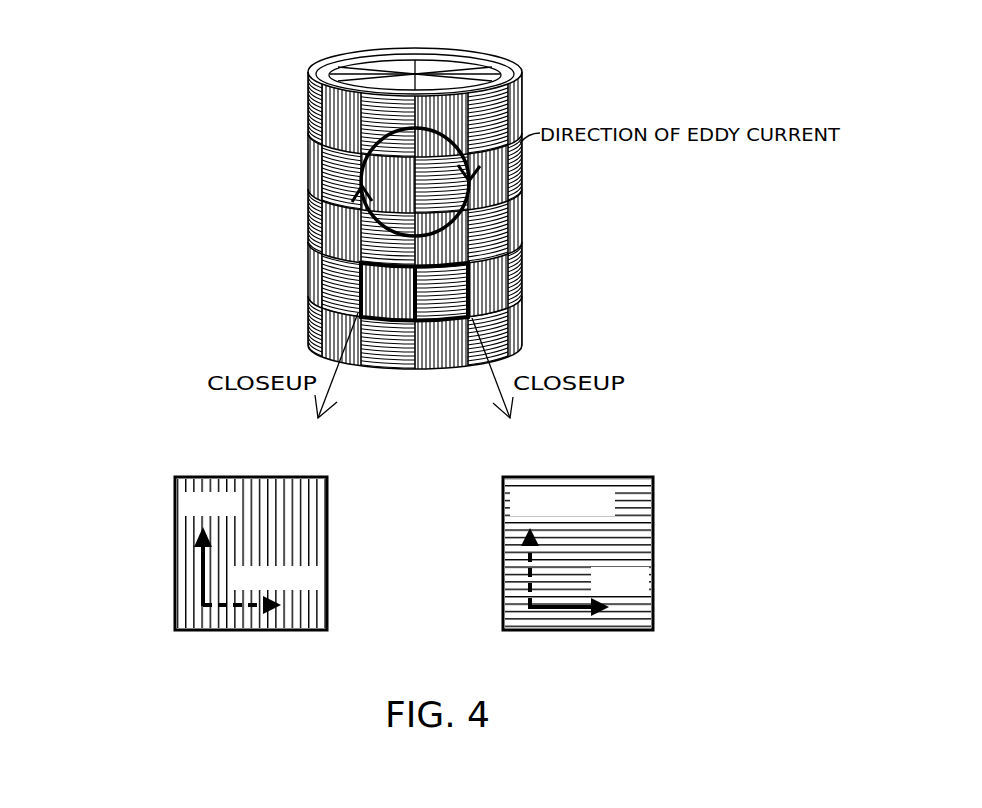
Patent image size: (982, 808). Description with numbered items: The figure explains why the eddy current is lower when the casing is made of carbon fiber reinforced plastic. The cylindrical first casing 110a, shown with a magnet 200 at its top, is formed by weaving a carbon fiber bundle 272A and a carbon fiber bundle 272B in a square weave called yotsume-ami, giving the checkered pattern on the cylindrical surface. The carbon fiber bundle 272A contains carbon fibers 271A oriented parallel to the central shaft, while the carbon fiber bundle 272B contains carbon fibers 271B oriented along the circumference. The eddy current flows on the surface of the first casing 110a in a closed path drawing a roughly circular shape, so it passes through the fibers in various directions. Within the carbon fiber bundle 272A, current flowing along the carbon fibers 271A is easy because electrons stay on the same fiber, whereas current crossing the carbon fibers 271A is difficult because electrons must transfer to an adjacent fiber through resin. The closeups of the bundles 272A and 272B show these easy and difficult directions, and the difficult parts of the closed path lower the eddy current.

The magnet 200 is at (430, 58).
The first casing 110a is at (523, 92).
The carbon fibers 271A is at (300, 513).
The carbon fiber bundle 272A is at (241, 530).
The carbon fibers 271B is at (633, 543).
The carbon fiber bundle 272B is at (640, 529).